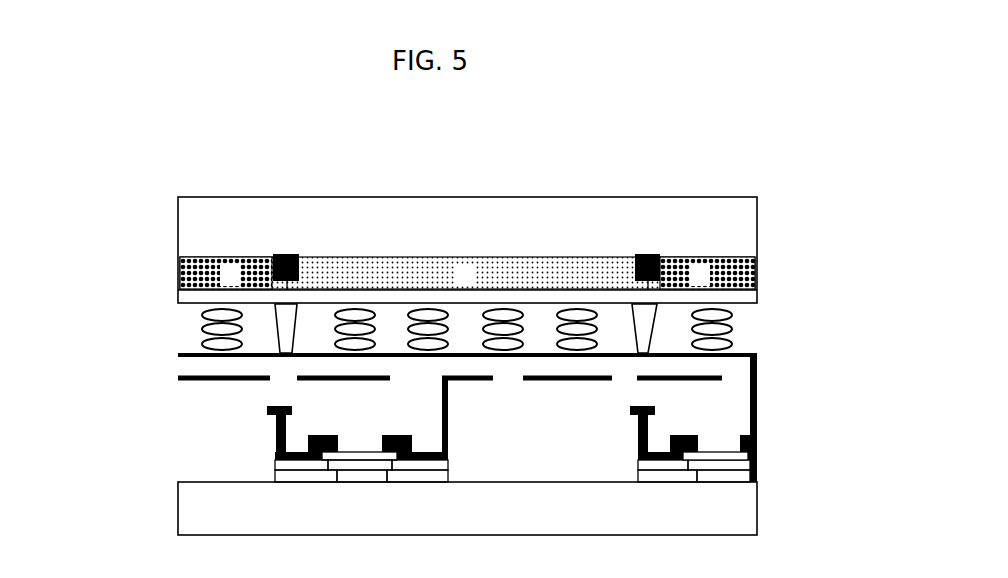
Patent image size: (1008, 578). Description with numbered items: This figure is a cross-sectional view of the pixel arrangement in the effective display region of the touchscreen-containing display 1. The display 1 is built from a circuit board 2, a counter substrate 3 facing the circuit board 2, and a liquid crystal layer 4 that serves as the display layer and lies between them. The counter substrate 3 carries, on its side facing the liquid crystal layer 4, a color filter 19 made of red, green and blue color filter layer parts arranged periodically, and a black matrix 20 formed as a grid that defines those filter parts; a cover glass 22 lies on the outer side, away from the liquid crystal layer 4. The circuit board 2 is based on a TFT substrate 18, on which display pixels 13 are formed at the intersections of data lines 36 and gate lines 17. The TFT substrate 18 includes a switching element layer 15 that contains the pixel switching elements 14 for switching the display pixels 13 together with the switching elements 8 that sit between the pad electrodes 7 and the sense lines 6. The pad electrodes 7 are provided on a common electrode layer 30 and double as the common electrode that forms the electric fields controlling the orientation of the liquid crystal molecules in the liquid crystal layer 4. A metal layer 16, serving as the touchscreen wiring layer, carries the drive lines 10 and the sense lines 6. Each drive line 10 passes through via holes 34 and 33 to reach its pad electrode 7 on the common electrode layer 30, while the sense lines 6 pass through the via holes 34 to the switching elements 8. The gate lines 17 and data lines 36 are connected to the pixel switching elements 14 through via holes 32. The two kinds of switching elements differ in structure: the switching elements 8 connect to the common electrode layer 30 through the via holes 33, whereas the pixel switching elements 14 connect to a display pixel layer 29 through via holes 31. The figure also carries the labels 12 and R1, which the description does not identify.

The touchscreen-containing display 1 is at (766, 160).
The circuit board 2 is at (91, 343).
The counter substrate 3 is at (151, 252).
The liquid crystal layer 4 is at (183, 327).
The sense lines 6 is at (631, 410).
The pad electrodes 7 is at (205, 358).
The switching elements 8 is at (719, 449).
The drive lines 10 is at (642, 410).
The contact portion 12 is at (642, 410).
The display pixels 13 is at (219, 404).
The pixel switching elements 14 is at (275, 457).
The switching element layer 15 is at (267, 410).
The metal layer 16 is at (276, 452).
The gate lines 17 is at (283, 406).
The TFT substrate 18 is at (757, 527).
The color filter 19 is at (583, 253).
The black matrix 20 is at (652, 253).
The cover glass 22 is at (757, 218).
The display pixel layer 29 is at (178, 378).
The common electrode layer 30 is at (179, 353).
The via holes 31 is at (449, 425).
The via holes 32 is at (286, 423).
The via holes 33 is at (750, 390).
The via holes 34 is at (638, 435).
The data lines 36 is at (279, 410).
The pixel region R1 is at (281, 196).